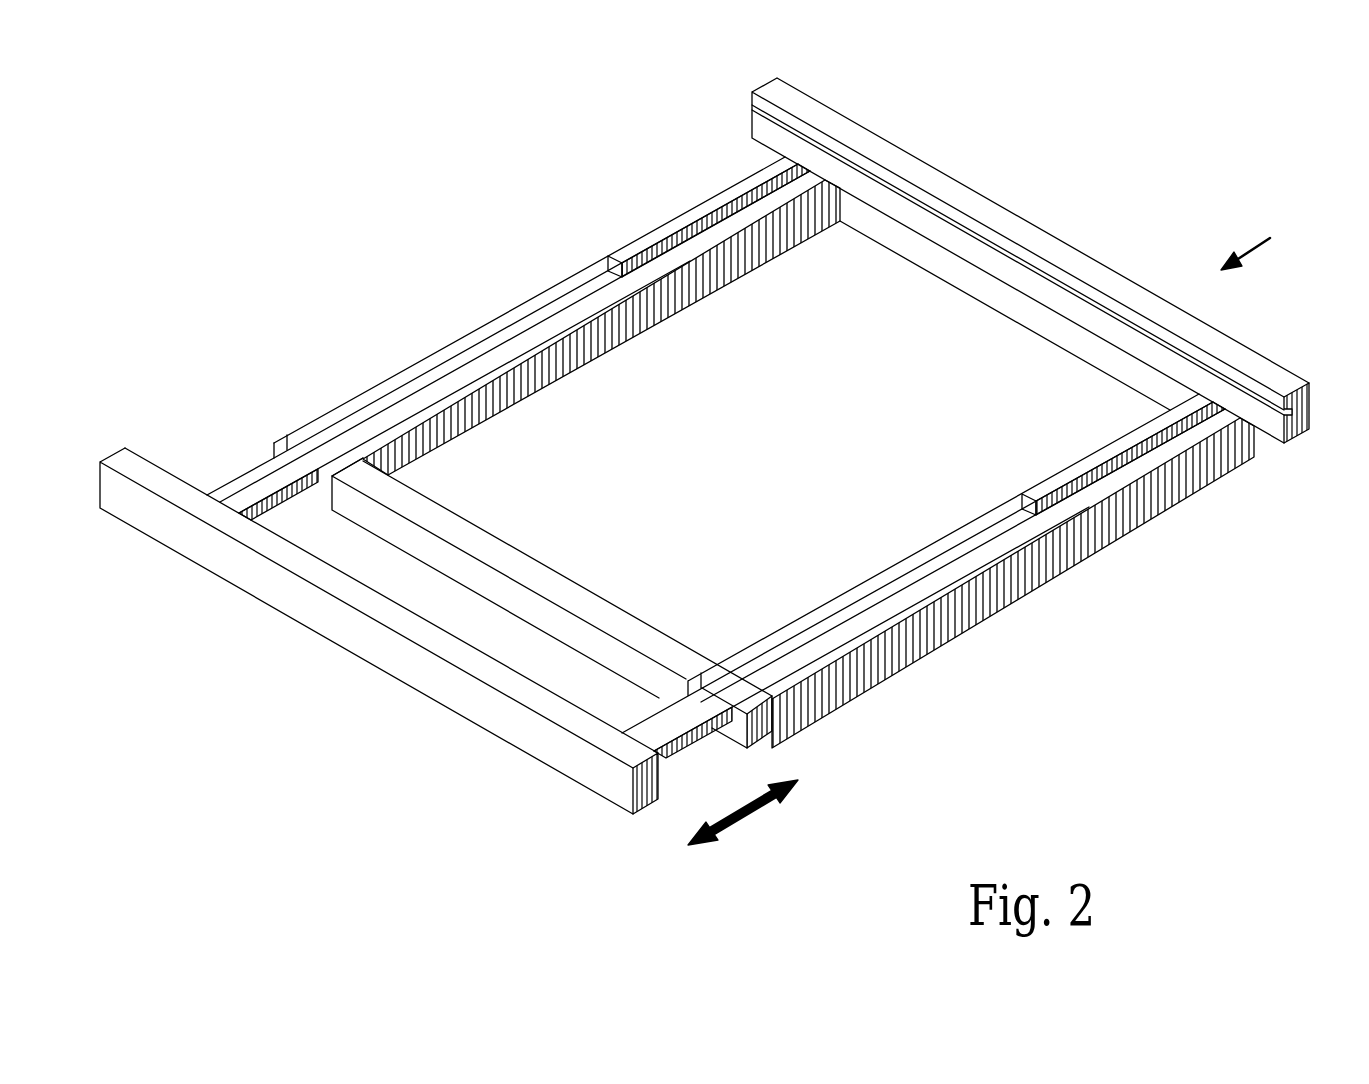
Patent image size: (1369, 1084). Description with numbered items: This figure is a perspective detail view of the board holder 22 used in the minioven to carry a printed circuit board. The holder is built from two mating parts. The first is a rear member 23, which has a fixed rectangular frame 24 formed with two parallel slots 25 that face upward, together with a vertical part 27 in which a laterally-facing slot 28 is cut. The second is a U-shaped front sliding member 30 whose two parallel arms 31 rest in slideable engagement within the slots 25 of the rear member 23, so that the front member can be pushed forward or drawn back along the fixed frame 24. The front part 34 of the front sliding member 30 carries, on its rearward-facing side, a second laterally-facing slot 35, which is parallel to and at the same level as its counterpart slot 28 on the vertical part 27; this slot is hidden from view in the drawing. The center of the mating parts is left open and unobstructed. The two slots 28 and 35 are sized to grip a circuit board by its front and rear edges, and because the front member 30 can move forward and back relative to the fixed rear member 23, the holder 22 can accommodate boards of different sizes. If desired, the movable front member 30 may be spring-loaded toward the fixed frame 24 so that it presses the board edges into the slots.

The board holder 22 is at (1264, 246).
The rear member 23 is at (1272, 376).
The fixed rectangular frame 24 is at (1050, 548).
The parallel slots 25 is at (663, 265).
The vertical part 27 is at (1068, 312).
The laterally-facing slot 28 is at (751, 105).
The front sliding member 30 is at (585, 765).
The parallel arms 31 is at (430, 390).
The front part 34 is at (537, 698).
The laterally-facing slot 35 is at (192, 480).